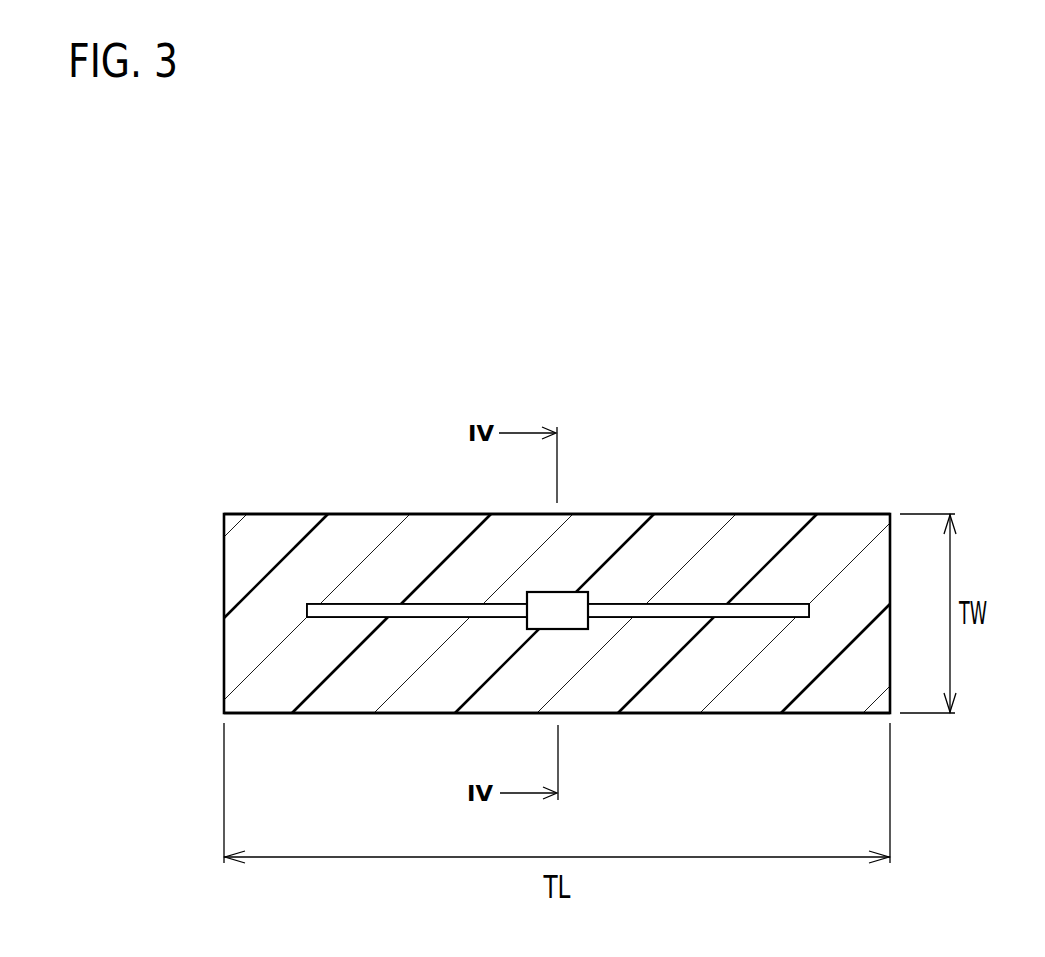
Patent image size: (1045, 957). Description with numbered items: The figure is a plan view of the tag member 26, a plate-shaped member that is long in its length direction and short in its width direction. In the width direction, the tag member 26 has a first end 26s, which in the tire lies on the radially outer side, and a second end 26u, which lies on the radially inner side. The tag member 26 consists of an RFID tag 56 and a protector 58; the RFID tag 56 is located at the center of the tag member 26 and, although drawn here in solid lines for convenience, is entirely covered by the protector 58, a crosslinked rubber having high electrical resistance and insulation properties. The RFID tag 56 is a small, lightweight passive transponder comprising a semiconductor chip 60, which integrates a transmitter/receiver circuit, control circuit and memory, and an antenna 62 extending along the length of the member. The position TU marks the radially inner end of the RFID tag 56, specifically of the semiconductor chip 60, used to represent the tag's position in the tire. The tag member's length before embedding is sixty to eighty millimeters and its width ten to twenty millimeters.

The tag member 26 is at (557, 570).
The first end 26s is at (285, 514).
The second end 26u is at (285, 713).
The protector 58 is at (365, 540).
The RFID tag 56 is at (573, 592).
The semiconductor chip 60 is at (575, 630).
The antenna 62 is at (747, 610).
The radially inner end of the RFID tag TU is at (545, 630).